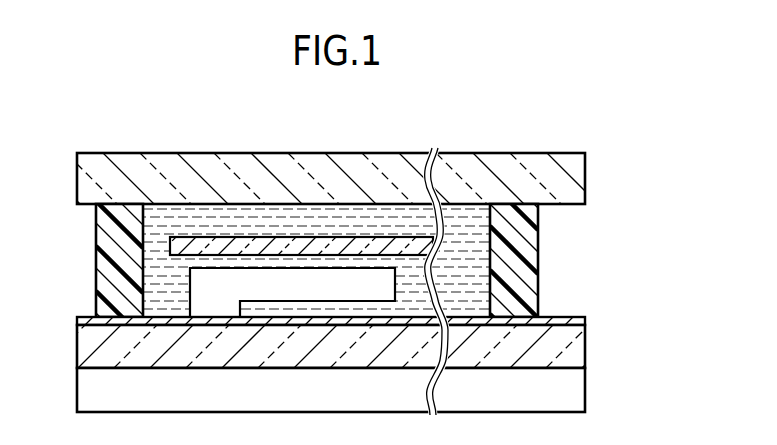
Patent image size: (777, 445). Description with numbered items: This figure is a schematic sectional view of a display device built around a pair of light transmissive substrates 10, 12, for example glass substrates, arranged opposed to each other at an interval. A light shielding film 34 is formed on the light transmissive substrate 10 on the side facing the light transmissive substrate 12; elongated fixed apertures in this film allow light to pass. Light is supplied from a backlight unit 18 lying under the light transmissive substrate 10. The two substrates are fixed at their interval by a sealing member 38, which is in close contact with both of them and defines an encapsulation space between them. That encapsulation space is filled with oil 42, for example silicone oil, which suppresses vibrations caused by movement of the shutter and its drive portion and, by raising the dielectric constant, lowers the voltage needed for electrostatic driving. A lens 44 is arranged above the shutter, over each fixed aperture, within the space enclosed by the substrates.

The light transmissive substrate 10 is at (568, 352).
The light transmissive substrate 12 is at (570, 176).
The backlight unit 18 is at (567, 387).
The light shielding film 34 is at (585, 320).
The sealing member 38 is at (112, 255).
The oil 42 is at (210, 222).
The lens 44 is at (307, 236).